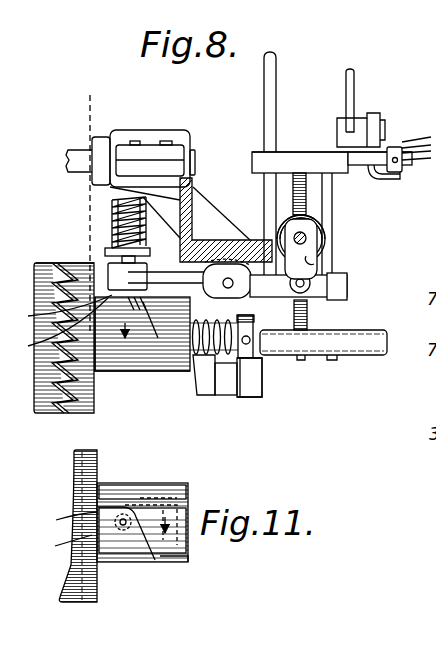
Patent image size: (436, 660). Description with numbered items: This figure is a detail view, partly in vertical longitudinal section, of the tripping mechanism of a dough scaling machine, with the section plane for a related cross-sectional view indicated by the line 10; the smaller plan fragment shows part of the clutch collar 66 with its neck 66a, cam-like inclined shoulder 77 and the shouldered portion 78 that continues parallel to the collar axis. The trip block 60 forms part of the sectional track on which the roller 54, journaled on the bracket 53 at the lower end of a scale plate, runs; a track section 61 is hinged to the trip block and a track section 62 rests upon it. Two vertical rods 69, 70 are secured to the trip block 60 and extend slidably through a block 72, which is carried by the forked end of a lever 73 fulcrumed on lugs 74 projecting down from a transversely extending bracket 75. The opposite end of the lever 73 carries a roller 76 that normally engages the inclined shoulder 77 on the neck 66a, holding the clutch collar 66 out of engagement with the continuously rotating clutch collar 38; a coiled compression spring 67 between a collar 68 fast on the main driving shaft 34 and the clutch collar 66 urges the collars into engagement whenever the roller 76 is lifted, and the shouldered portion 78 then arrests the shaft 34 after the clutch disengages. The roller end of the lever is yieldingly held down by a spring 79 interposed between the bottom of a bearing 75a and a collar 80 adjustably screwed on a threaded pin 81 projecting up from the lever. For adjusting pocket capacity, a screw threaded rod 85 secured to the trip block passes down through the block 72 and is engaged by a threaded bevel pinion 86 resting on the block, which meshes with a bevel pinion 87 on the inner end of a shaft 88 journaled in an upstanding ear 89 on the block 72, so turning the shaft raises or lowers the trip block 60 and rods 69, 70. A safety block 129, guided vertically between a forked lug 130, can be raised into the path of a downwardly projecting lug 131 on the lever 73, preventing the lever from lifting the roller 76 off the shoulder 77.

In FIG. 8, the section line 10 is at (102, 108).
In FIG. 8, the main driving shaft 34 is at (368, 357).
In FIG. 8, the clutch collar 38 is at (40, 396).
In FIG. 8, the bracket 53 is at (354, 82).
In FIG. 8, the roller 54 is at (376, 113).
In FIG. 8, the trip block 60 is at (368, 170).
In FIG. 8, the track section 61 is at (415, 172).
In FIG. 8, the track section 62 is at (418, 142).
In FIG. 8, the clutch collar 66 is at (70, 406).
In FIG. 11, the clutch collar 66 is at (72, 604).
In FIG. 8, the neck 66a is at (168, 371).
In FIG. 11, the neck 66a is at (117, 563).
In FIG. 8, the coiled compression spring 67 is at (221, 396).
In FIG. 8, the collar 68 is at (260, 372).
In FIG. 8, the rod 69 is at (334, 243).
In FIG. 8, the rod 70 is at (265, 96).
In FIG. 8, the block 72 is at (348, 291).
In FIG. 8, the lever 73 is at (330, 301).
In FIG. 8, the lugs 74 is at (238, 278).
In FIG. 8, the bracket 75 is at (207, 220).
In FIG. 8, the bearing 75a is at (142, 145).
In FIG. 8, the roller 76 is at (57, 327).
In FIG. 11, the roller 76 is at (60, 547).
In FIG. 8, the inclined shoulder 77 is at (153, 316).
In FIG. 11, the inclined shoulder 77 is at (147, 562).
In FIG. 8, the shouldered portion 78 is at (59, 312).
In FIG. 11, the shouldered portion 78 is at (64, 523).
In FIG. 8, the spring 79 is at (112, 205).
In FIG. 8, the collar 80 is at (108, 252).
In FIG. 8, the screw threaded pin 81 is at (112, 228).
In FIG. 8, the screw threaded rod 85 is at (311, 173).
In FIG. 8, the bevel pinion 86 is at (326, 249).
In FIG. 8, the bevel pinion 87 is at (324, 224).
In FIG. 8, the shaft 88 is at (318, 234).
In FIG. 8, the ear 89 is at (318, 264).
In FIG. 8, the block 129 is at (230, 394).
In FIG. 8, the forked lug 130 is at (203, 395).
In FIG. 8, the lug 131 is at (254, 352).